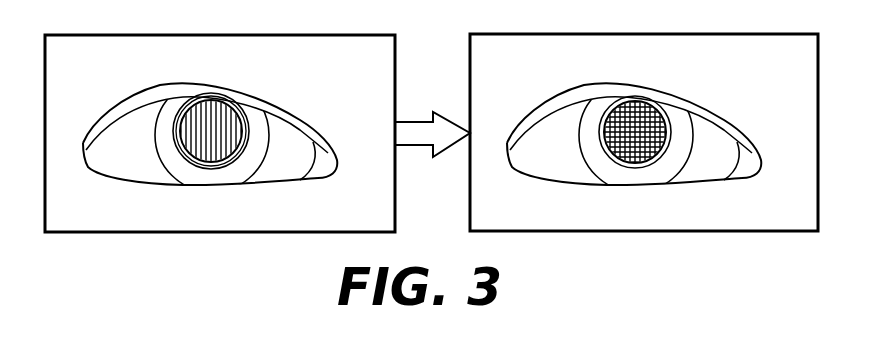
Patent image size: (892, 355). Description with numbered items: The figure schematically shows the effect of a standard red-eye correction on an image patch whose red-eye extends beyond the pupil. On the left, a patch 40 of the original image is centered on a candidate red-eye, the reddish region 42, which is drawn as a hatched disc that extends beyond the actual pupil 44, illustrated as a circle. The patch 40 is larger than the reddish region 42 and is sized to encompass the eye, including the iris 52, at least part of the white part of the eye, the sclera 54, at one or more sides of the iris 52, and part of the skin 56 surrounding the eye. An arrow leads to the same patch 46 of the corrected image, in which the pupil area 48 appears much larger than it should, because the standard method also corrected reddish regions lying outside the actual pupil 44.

The patch of the original image 40 is at (193, 34).
The patch of the corrected image 46 is at (593, 33).
The iris 52 is at (257, 122).
The skin surrounding the eye 56 is at (283, 108).
The white part of the eye (sclera) 54 is at (293, 177).
The reddish region (candidate red-eye) 42 is at (203, 162).
The actual pupil 44 is at (228, 165).
The pupil area 48 is at (660, 160).